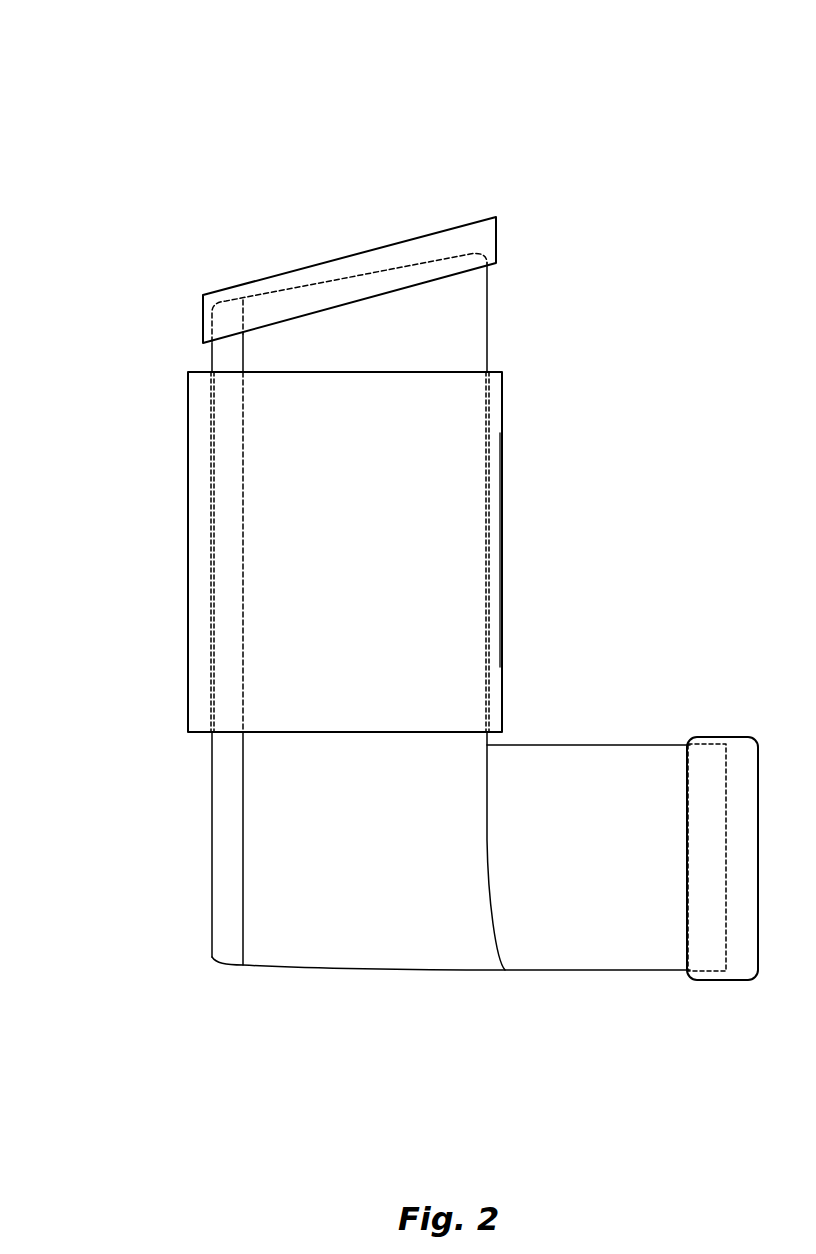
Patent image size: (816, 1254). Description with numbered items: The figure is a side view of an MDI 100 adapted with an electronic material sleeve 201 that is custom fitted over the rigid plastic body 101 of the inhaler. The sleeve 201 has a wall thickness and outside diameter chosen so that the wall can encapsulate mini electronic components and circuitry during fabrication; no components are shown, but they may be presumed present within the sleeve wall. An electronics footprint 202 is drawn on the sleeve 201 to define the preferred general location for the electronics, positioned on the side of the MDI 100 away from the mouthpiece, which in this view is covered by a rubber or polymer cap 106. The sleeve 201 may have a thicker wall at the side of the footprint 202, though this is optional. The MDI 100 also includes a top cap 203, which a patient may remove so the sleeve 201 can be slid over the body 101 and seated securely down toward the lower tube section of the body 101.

The MDI 100 is at (413, 133).
The rigid plastic body 101 is at (212, 858).
The cap 106 is at (721, 737).
The electronic material sleeve 201 is at (503, 503).
The electronics footprint 202 is at (197, 422).
The top cap 203 is at (317, 263).